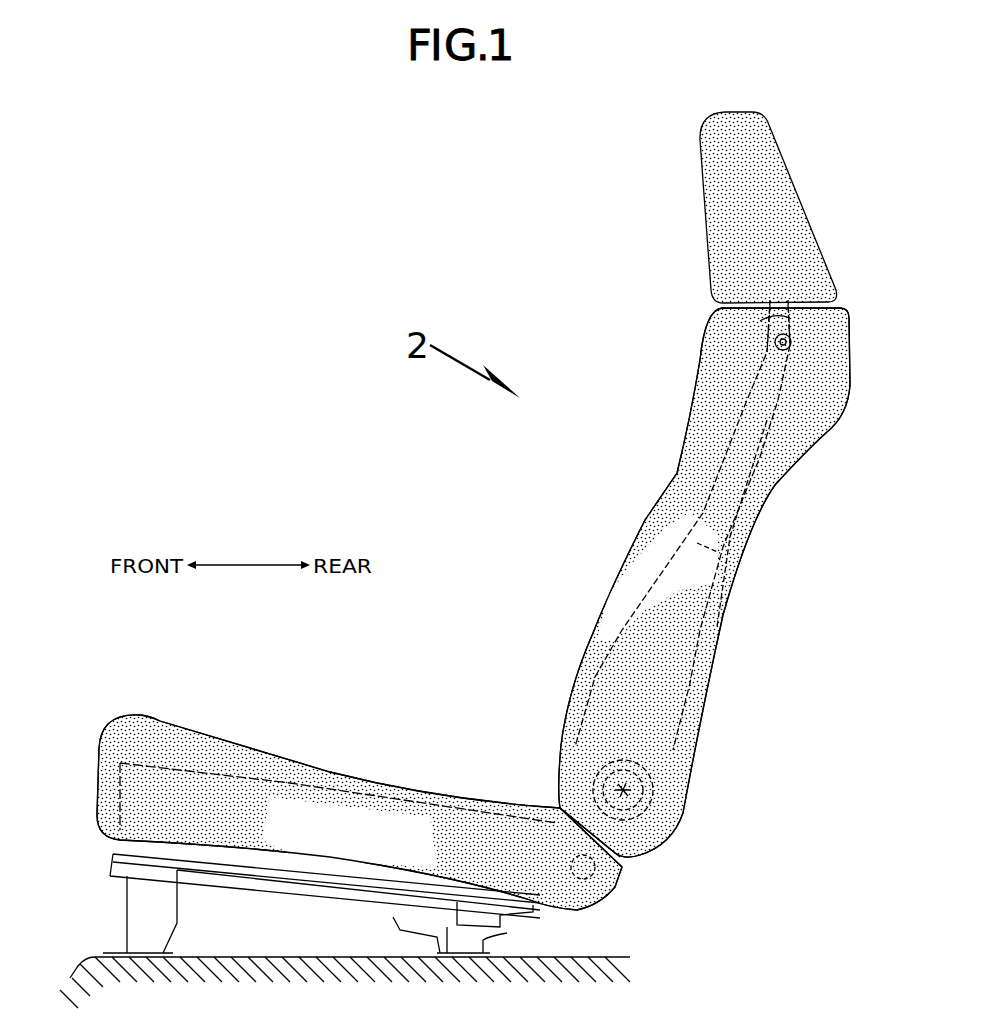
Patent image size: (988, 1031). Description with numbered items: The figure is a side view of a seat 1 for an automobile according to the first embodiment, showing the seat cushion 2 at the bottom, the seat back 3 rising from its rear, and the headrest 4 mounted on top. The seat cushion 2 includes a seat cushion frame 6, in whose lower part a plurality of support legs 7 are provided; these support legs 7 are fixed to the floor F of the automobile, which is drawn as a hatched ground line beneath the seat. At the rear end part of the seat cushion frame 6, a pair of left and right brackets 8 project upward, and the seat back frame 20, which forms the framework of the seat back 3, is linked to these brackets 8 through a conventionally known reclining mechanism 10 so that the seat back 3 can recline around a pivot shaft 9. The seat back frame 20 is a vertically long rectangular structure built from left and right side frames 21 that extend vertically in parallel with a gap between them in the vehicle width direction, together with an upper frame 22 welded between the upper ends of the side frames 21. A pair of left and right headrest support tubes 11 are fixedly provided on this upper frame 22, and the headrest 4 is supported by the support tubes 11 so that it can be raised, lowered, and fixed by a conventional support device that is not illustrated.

The seat 1 is at (521, 555).
The seat cushion 2 is at (412, 790).
The seat back 3 is at (657, 533).
The headrest 4 is at (713, 213).
The seat cushion frame 6 is at (277, 900).
The support leg 7 is at (137, 910).
The bracket 8 is at (620, 883).
The pivot shaft 9 is at (673, 830).
The reclining mechanism 10 is at (660, 762).
The headrest support tube 11 is at (760, 321).
The seat back frame 20 is at (728, 419).
The side frame 21 is at (713, 663).
The upper frame 22 is at (795, 345).
The floor F is at (607, 958).